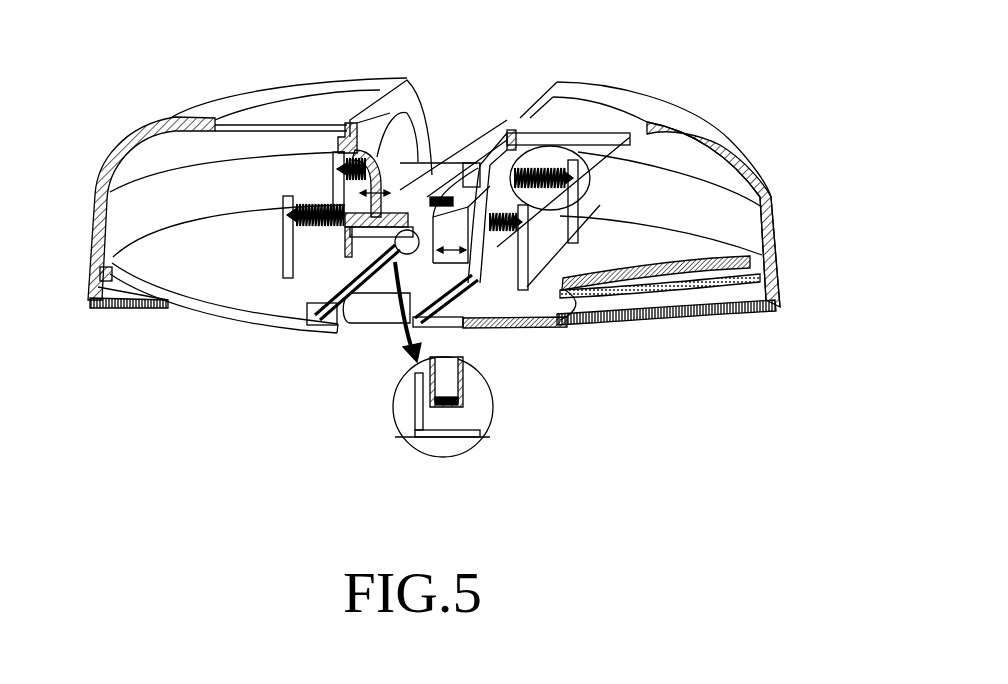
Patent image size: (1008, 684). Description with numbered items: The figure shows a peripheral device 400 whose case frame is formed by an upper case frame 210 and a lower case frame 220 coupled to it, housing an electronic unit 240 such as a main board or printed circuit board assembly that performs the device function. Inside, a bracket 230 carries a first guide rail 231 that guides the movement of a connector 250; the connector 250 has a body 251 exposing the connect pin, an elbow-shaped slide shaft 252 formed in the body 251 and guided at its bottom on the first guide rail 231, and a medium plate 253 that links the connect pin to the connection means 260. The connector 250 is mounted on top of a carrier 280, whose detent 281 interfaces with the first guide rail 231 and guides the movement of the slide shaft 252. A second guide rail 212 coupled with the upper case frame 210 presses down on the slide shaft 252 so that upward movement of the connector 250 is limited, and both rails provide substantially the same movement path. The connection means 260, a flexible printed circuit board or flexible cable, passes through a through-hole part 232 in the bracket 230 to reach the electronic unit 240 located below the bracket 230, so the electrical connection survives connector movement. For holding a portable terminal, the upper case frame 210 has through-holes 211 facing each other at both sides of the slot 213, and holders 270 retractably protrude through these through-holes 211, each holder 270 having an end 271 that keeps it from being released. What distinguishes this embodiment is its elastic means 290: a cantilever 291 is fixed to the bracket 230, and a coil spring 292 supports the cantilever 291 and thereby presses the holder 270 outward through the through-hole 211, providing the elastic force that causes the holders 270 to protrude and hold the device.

The peripheral device 400 is at (778, 58).
The upper case frame 210 is at (772, 175).
The through-holes 211 is at (340, 158).
The second guide rail 212 is at (455, 408).
The slot 213 is at (503, 98).
The lower case frame 220 is at (740, 325).
The bracket 230 is at (514, 330).
The first guide rail 231 is at (333, 312).
The through-hole part 232 is at (340, 322).
The electronic unit 240 is at (634, 300).
The connector 250 is at (405, 122).
The body 251 is at (482, 400).
The elbow-shaped slide shaft 252 is at (420, 393).
The medium plate 253 is at (403, 422).
The connection means 260 is at (385, 332).
The holder 270 is at (468, 200).
The end 271 is at (345, 142).
The carrier 280 is at (290, 235).
The detent 281 is at (408, 226).
The elastic means 290 is at (540, 160).
The cantilever 291 is at (600, 191).
The coil spring 292 is at (534, 247).